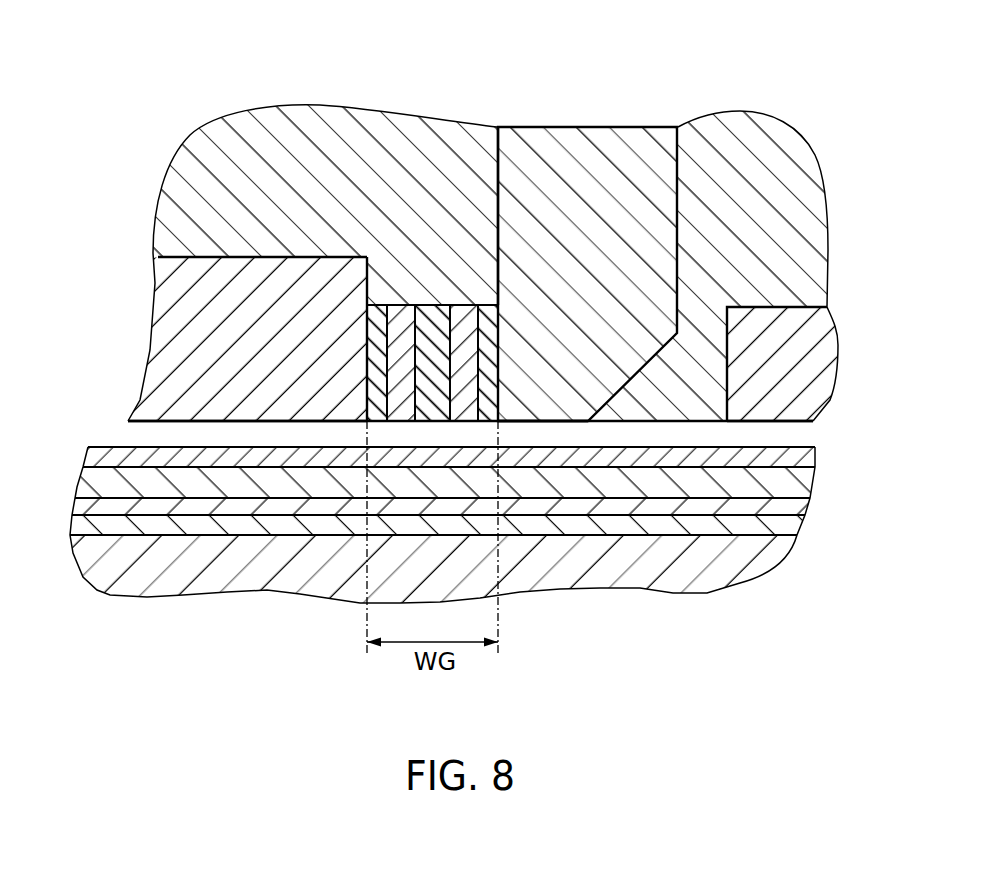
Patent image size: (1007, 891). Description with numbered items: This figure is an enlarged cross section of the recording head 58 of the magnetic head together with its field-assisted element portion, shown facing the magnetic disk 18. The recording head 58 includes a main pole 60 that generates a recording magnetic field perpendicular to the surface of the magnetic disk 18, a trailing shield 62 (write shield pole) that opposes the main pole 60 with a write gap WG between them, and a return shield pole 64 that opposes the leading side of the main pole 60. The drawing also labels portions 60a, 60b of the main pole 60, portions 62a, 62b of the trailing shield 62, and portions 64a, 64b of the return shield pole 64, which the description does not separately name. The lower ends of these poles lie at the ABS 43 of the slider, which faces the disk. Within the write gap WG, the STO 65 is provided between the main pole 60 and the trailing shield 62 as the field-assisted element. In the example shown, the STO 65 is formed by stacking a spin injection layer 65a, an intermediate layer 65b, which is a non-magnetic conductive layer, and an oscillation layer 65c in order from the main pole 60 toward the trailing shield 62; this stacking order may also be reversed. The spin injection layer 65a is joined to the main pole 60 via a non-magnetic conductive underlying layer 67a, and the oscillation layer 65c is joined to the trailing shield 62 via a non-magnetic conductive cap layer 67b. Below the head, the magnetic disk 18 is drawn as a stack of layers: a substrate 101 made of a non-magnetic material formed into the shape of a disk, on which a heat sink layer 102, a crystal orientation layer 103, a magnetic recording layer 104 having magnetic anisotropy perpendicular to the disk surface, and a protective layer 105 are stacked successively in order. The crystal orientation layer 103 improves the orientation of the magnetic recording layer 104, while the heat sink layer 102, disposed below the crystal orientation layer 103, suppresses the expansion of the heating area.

The recording head 58 is at (250, 88).
The main pole 60 is at (603, 147).
The end surface of main pole 60a is at (575, 405).
The side surface of main pole 60b is at (497, 146).
The trailing shield 62 is at (172, 318).
The end surface of side shield 62a is at (216, 410).
The top surface of side shield 62b is at (377, 253).
The return shield pole 64 is at (822, 352).
The end surface of trailing shield 64a is at (772, 405).
The side surface of trailing shield 64b is at (726, 356).
The STO 65 is at (502, 72).
The spin injection layer 65a is at (467, 302).
The intermediate layer 65b is at (438, 302).
The oscillation layer 65c is at (408, 302).
The non-magnetic conductive layer (underlying layer) 67a is at (503, 303).
The non-magnetic conductive layer (cap layer) 67b is at (385, 300).
The ABS 43 is at (666, 425).
The magnetic disk 18 is at (110, 603).
The substrate 101 is at (98, 563).
The heat sink layer 102 is at (82, 524).
The crystal orientation layer 103 is at (84, 508).
The magnetic recording layer 104 is at (82, 486).
The protective layer 105 is at (84, 458).